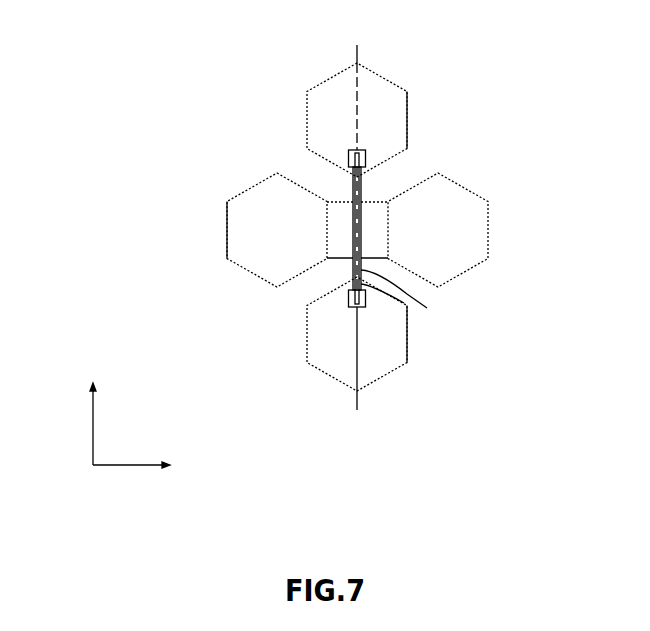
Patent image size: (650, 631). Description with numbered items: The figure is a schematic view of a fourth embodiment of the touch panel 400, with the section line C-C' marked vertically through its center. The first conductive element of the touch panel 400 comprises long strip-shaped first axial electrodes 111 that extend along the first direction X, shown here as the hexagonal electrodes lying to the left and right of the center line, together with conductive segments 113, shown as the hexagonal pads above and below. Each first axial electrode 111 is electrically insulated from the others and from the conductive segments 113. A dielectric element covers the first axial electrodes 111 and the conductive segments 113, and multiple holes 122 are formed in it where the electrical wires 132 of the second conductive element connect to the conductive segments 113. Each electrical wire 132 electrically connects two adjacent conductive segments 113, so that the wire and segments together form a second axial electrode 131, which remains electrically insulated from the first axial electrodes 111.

The touch panel 400 is at (73, 63).
The first axial electrode 111 is at (488, 203).
The hole 122 is at (364, 149).
The second axial electrode 131 is at (417, 272).
The electrical wire 132 is at (408, 240).
The conductive segment 113 is at (407, 350).